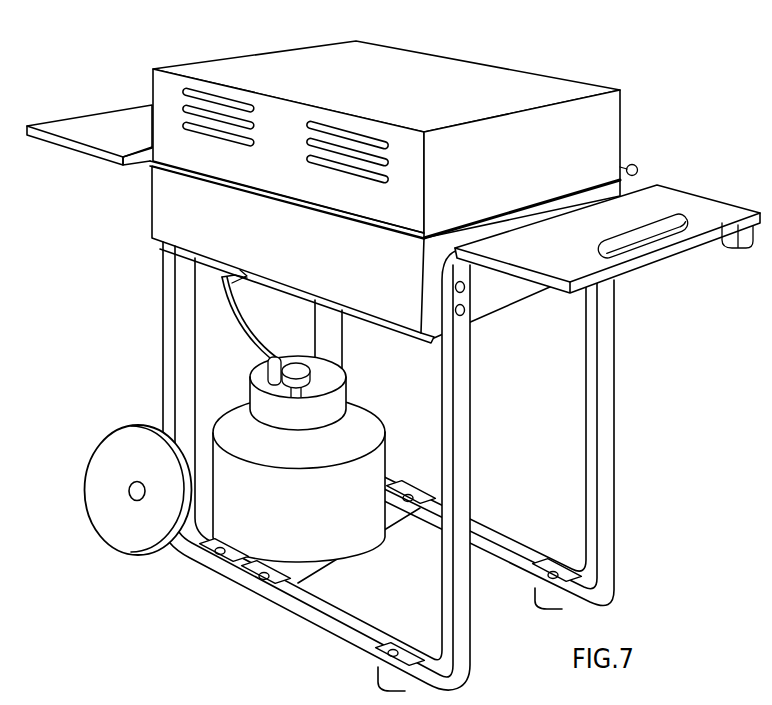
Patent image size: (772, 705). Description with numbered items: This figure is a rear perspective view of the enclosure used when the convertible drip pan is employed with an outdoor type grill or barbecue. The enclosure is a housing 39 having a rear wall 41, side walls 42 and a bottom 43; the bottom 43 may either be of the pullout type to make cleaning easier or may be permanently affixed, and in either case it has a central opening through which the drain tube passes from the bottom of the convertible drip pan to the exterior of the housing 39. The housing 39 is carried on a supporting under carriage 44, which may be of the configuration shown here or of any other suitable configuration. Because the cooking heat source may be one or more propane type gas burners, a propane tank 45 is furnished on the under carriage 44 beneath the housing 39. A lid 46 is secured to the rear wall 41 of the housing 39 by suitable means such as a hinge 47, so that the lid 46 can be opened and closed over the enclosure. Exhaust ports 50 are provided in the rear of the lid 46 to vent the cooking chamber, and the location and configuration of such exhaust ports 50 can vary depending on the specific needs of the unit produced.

The housing 39 is at (148, 194).
The rear wall 41 is at (176, 222).
The side walls 42 is at (487, 290).
The bottom 43 is at (227, 283).
The supporting under carriage 44 is at (101, 537).
The propane tank 45 is at (260, 532).
The lid 46 is at (495, 99).
The hinge 47 is at (185, 168).
The exhaust ports 50 is at (183, 105).